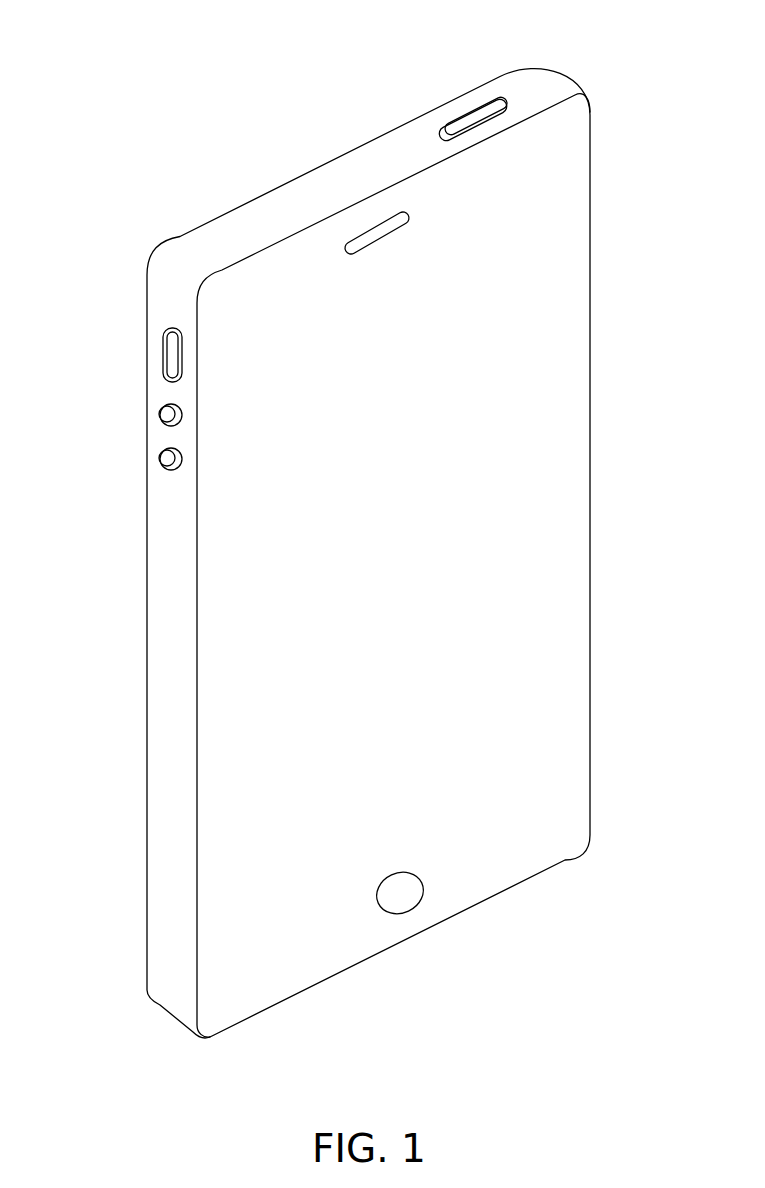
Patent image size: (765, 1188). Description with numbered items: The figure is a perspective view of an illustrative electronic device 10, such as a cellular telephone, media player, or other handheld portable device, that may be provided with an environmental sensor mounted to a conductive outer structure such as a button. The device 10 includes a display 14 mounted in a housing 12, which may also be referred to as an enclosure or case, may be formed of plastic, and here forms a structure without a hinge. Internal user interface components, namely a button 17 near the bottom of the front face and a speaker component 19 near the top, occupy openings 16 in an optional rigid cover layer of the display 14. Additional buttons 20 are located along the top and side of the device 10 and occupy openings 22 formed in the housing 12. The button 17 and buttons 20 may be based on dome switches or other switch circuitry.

The electronic device 10 is at (374, 527).
The housing 12 is at (165, 915).
The display 14 is at (548, 484).
The openings 16 is at (392, 552).
The button 17 is at (415, 888).
The speaker component 19 is at (390, 222).
The buttons 20 is at (475, 115).
The openings 22 is at (522, 108).